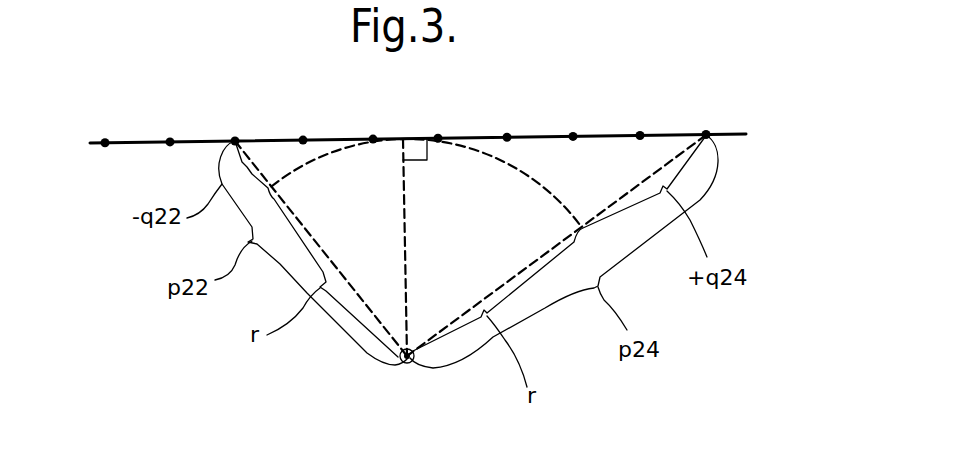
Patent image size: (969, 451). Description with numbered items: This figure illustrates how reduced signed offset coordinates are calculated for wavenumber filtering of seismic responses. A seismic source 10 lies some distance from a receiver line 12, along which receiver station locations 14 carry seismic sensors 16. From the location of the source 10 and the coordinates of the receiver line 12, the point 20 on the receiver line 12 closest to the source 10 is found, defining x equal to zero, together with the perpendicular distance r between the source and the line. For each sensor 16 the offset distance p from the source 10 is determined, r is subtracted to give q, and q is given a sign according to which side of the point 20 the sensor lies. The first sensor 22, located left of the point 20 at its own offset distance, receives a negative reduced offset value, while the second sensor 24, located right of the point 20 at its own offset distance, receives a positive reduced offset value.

The seismic source 10 is at (411, 364).
The receiver line 12 is at (746, 133).
The receiver station location 14 is at (507, 136).
The sensor 16 is at (573, 136).
The point on the receiver line closest to the source 20 is at (403, 138).
The first sensor 22 is at (235, 140).
The second sensor 24 is at (706, 134).